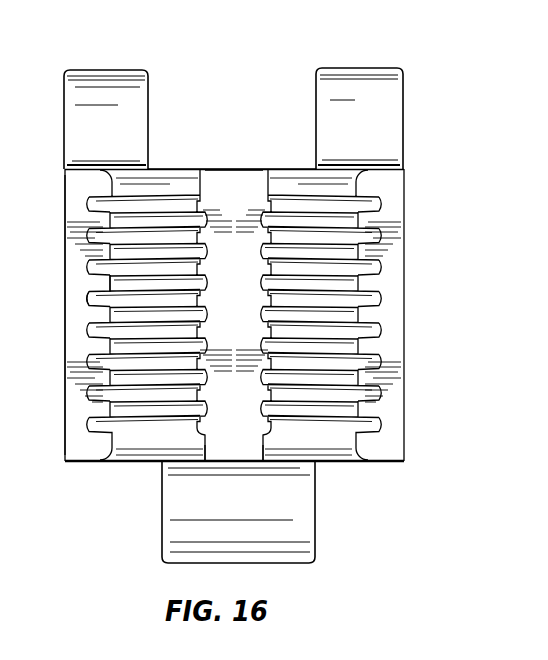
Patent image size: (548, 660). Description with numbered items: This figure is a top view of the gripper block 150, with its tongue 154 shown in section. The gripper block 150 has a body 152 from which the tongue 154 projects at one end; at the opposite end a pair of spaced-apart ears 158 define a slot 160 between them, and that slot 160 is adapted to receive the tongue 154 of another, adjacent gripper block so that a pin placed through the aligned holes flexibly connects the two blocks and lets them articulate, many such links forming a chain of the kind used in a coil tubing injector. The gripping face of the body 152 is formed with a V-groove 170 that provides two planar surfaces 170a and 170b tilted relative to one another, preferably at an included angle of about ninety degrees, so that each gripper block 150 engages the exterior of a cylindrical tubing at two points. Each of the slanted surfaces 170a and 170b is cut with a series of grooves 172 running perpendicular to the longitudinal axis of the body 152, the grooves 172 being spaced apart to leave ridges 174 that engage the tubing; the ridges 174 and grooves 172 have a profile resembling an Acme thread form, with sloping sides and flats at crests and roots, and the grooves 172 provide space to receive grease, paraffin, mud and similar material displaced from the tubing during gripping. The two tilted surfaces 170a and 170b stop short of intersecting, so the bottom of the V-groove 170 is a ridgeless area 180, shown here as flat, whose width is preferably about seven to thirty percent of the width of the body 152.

The gripper block 150 is at (53, 86).
The body 152 is at (67, 223).
The tongue 154 is at (302, 504).
The ears 158 is at (78, 124).
The slot 160 is at (150, 88).
The V-groove 170 is at (229, 191).
The planar surface 170a is at (292, 178).
The planar surface 170b is at (165, 176).
The groove 172 is at (94, 295).
The ridge 174 is at (110, 284).
The ridgeless bottom surface 180 is at (232, 434).